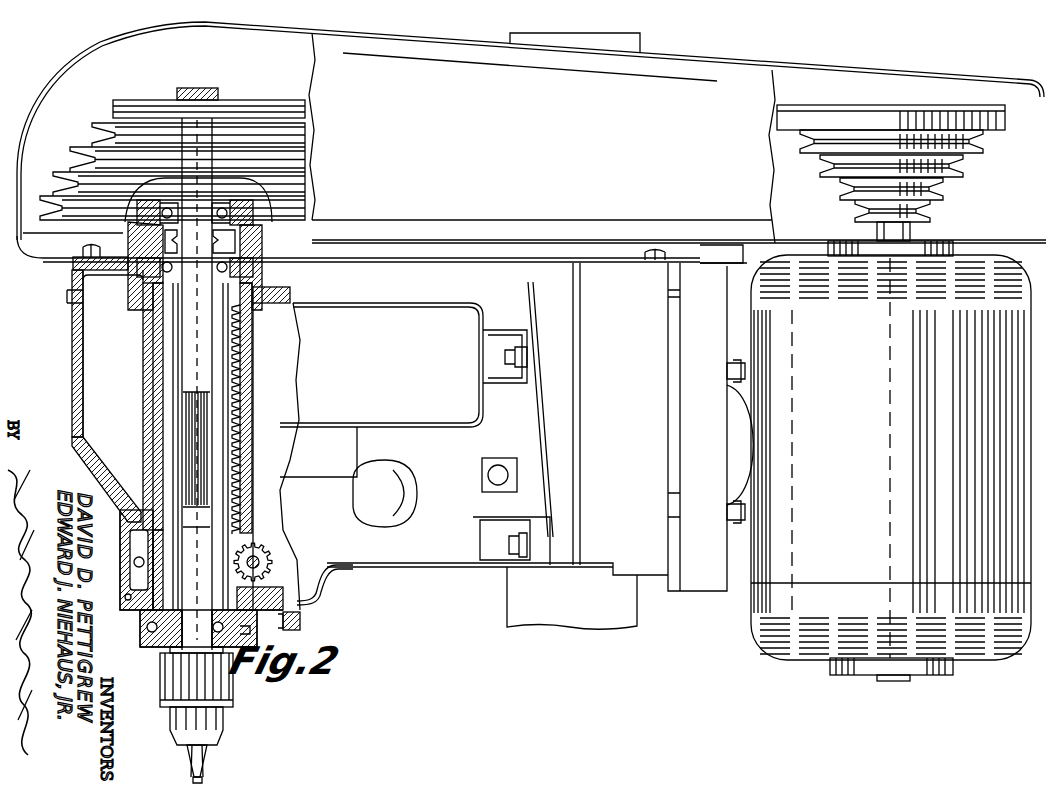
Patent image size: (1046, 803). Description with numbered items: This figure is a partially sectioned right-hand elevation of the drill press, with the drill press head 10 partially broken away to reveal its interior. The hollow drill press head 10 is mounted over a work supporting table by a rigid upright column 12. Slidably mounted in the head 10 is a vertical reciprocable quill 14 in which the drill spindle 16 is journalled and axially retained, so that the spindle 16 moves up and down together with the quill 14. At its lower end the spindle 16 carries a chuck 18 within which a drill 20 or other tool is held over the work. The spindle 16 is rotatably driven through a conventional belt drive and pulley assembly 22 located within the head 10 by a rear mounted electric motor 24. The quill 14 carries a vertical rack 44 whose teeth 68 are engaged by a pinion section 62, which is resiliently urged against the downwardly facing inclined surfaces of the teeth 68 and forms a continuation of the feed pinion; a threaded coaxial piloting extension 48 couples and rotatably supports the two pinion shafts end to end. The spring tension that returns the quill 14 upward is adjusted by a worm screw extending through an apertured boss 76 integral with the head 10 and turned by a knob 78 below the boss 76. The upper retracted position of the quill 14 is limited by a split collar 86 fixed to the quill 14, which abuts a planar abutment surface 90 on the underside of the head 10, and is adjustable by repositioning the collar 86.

The drill press head 10 is at (73, 263).
The upright column 12 is at (602, 13).
The quill 14 is at (149, 645).
The drill spindle 16 is at (205, 633).
The chuck 18 is at (217, 757).
The drill 20 is at (197, 781).
The belt drive and pulley assembly 22 is at (147, 100).
The electric motor 24 is at (787, 640).
The rack 44 is at (233, 357).
The piloting extension 48 is at (260, 562).
The pinion section 62 is at (278, 538).
The rack teeth 68 is at (233, 413).
The apertured boss 76 is at (303, 601).
The knob 78 is at (291, 630).
The split collar 86 is at (248, 630).
The planar abutment surface 90 is at (283, 621).